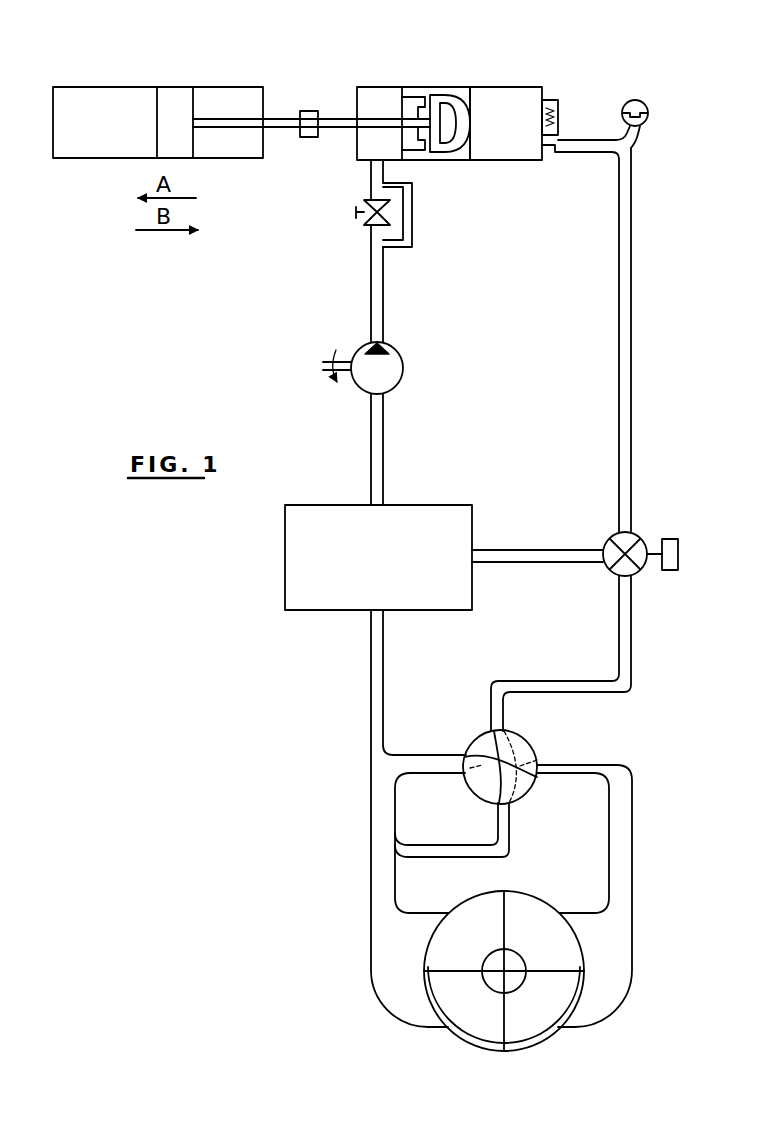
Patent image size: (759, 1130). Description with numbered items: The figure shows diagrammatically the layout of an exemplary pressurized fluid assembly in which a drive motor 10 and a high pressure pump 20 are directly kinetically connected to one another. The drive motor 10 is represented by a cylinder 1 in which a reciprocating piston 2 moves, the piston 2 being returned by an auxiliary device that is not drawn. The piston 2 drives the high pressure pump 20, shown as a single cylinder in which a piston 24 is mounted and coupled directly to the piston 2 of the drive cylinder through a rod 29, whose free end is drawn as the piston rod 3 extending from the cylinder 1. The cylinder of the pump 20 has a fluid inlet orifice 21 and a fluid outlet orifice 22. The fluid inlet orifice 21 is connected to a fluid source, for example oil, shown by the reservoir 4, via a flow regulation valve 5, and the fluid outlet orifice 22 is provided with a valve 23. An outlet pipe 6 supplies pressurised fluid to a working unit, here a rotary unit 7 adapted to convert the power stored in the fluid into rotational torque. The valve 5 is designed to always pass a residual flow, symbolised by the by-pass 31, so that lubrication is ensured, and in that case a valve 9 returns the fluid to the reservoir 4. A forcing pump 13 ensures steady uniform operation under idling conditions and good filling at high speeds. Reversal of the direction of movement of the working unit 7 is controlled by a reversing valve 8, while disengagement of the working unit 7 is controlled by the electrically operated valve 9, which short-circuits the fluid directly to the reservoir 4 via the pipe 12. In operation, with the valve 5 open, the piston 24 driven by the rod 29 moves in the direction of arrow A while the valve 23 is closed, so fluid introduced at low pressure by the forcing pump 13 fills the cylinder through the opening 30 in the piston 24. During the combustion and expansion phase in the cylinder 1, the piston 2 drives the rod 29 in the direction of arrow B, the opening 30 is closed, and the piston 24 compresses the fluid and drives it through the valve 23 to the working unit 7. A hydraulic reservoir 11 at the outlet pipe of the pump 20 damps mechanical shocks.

The cylinder 1 is at (66, 152).
The reciprocating piston 2 is at (172, 92).
The piston rod 3 is at (218, 120).
The reservoir 4 is at (284, 586).
The flow regulation valve 5 is at (356, 215).
The outlet pipe 6 is at (627, 283).
The rotary unit 7 is at (549, 1046).
The reversing valve 8 is at (537, 755).
The electrically operated valve 9 is at (645, 570).
The drive motor 10 is at (103, 85).
The hydraulic reservoir 11 is at (649, 109).
The pipe 12 is at (518, 548).
The forcing pump 13 is at (400, 372).
The high pressure pump 20 is at (491, 84).
The fluid inlet orifice 21 is at (362, 152).
The fluid outlet orifice 22 is at (540, 135).
The valve 23 is at (558, 112).
The piston 24 is at (418, 95).
The rod 29 is at (341, 121).
The opening 30 is at (468, 126).
The by-pass 31 is at (413, 222).